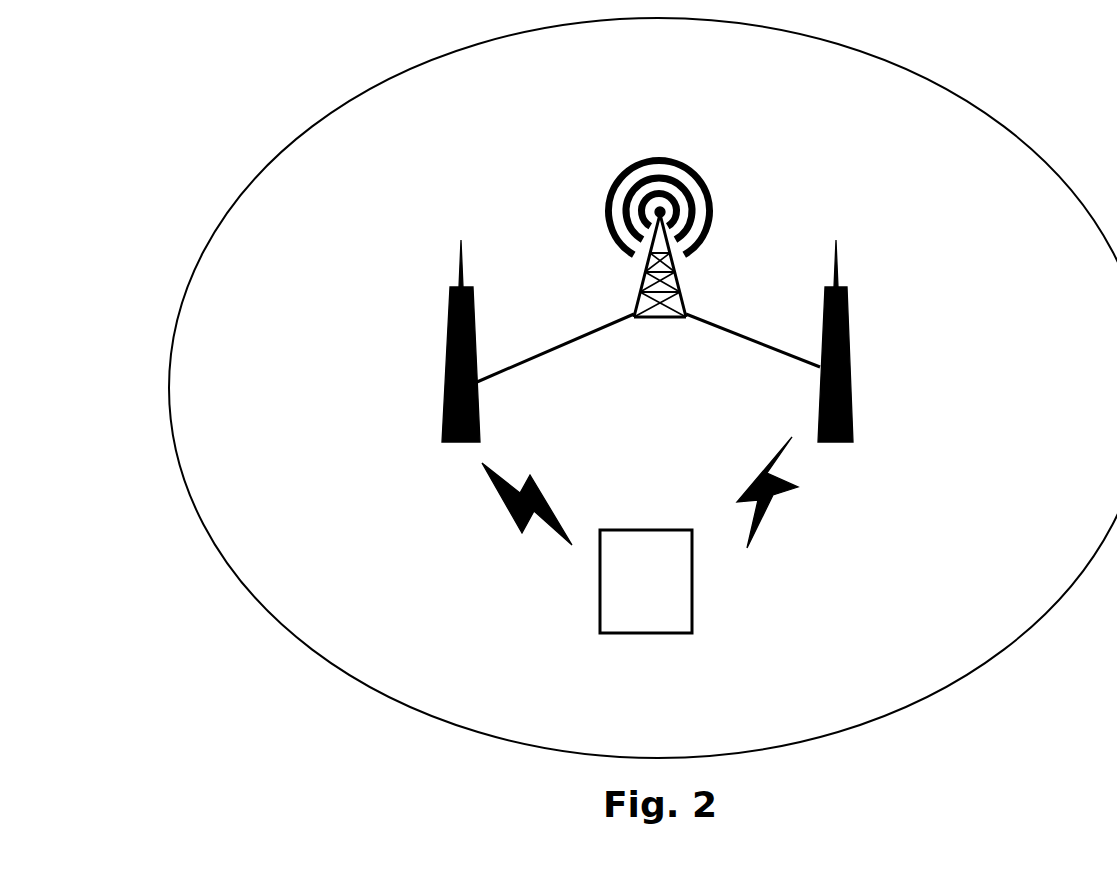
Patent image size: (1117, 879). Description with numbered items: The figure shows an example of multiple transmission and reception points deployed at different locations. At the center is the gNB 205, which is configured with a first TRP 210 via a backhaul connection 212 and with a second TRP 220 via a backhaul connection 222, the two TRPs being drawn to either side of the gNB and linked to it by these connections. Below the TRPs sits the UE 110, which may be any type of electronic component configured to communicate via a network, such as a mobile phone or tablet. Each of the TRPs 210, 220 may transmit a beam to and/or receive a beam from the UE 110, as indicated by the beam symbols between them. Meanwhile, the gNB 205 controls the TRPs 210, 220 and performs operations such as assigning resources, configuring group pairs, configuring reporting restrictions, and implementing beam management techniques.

The gNB 205 is at (658, 250).
The first TRP 210 is at (439, 341).
The second TRP 220 is at (859, 341).
The backhaul connection 212 is at (555, 348).
The backhaul connection 222 is at (753, 340).
The UE 110 is at (646, 581).